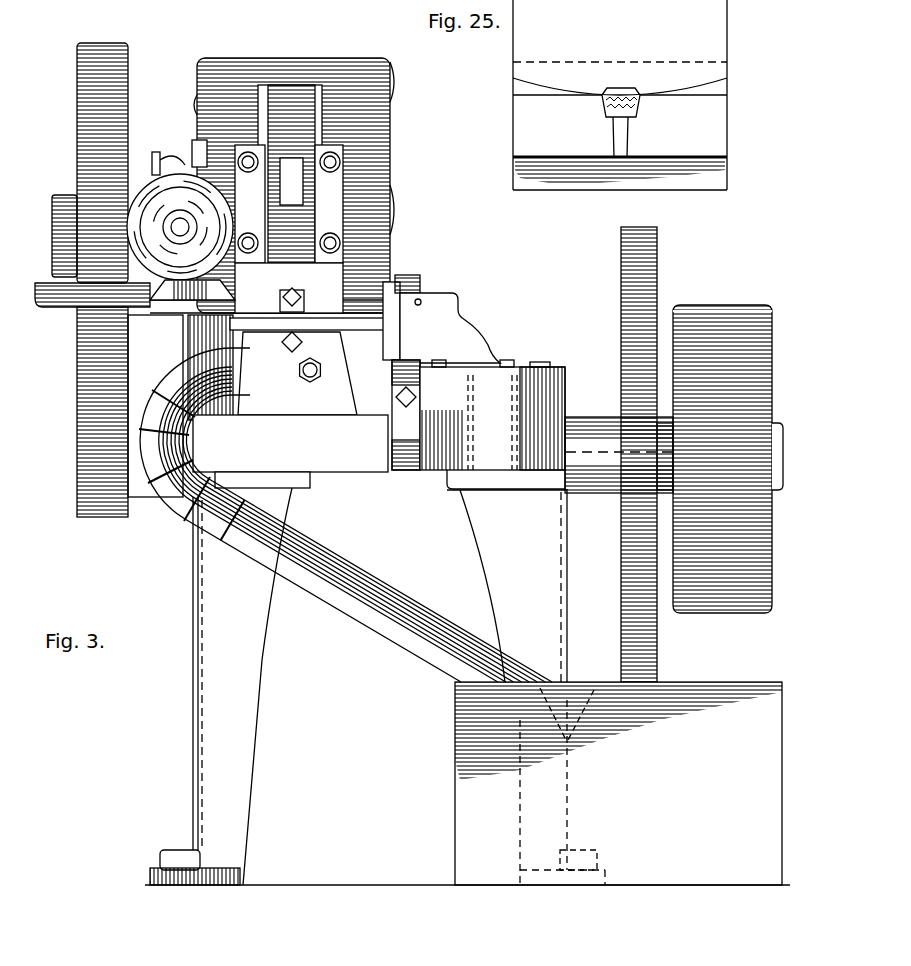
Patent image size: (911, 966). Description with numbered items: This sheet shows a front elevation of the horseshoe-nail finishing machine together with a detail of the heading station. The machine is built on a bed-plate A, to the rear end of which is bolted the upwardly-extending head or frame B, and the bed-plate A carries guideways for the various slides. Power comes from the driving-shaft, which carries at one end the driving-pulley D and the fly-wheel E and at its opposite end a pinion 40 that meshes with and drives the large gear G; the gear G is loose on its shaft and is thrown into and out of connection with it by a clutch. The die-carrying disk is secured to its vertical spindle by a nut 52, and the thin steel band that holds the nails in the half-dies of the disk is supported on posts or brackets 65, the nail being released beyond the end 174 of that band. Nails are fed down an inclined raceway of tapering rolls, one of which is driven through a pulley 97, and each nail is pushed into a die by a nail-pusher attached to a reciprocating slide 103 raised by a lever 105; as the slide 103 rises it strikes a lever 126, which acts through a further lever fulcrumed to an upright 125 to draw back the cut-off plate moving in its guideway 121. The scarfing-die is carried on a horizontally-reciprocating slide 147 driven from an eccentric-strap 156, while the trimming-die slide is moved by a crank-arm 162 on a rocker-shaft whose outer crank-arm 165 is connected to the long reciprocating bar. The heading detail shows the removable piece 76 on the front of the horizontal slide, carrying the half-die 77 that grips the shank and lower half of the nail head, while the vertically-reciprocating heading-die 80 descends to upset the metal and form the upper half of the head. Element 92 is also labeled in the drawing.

In FIG. 3, the large gear G is at (77, 79).
In FIG. 3, the head or frame B is at (288, 66).
In FIG. 3, the reciprocating slide 103 is at (200, 150).
In FIG. 3, the lever 105 is at (185, 162).
In FIG. 3, the pulley 97 is at (180, 227).
In FIG. 3, the slide window 92 is at (296, 185).
In FIG. 3, the nut 52 is at (304, 297).
In FIG. 3, the eccentric-strap 156 is at (408, 287).
In FIG. 3, the horizontally-reciprocating slide 147 is at (442, 303).
In FIG. 3, the fly-wheel E is at (621, 282).
In FIG. 3, the driving-pulley D is at (708, 305).
In FIG. 3, the posts or brackets 65 is at (402, 348).
In FIG. 3, the upright 125 is at (193, 352).
In FIG. 3, the guideway 121 is at (306, 312).
In FIG. 3, the crank-arm 162 is at (289, 349).
In FIG. 3, the end of the band 174 is at (303, 378).
In FIG. 3, the pinion 40 is at (77, 478).
In FIG. 3, the bed-plate A is at (358, 460).
In FIG. 3, the crank-arm 165 is at (445, 472).
In FIG. 3, the lever 126 is at (350, 576).
In FIG. 25, the heading-die 80 is at (620, 56).
In FIG. 25, the half-die 77 is at (620, 122).
In FIG. 25, the removable piece 76 is at (727, 166).